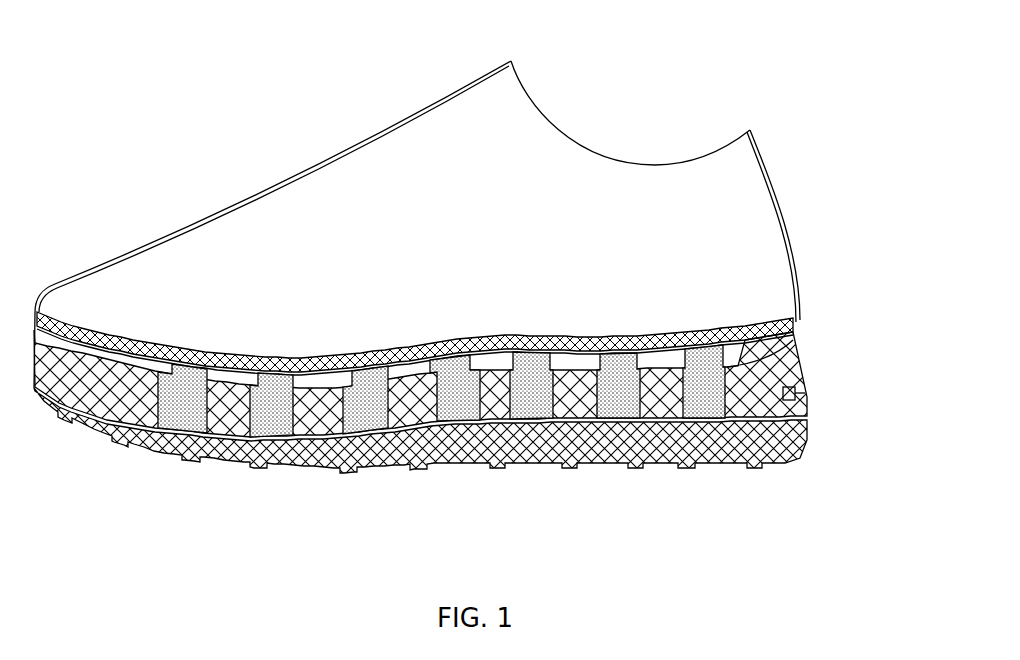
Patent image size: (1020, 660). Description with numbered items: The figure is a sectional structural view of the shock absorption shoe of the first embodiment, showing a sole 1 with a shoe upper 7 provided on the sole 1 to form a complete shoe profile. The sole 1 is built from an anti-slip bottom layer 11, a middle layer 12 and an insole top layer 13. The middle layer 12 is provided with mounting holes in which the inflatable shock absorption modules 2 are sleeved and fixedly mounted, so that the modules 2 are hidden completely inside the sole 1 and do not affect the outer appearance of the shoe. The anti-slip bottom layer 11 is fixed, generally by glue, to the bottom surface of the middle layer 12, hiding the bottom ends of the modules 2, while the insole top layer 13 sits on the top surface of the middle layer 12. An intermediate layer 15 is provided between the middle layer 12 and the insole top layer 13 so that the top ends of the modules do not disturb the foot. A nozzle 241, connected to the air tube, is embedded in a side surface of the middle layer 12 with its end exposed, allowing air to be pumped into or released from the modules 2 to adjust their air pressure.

The sole 1 is at (807, 357).
The shoe upper 7 is at (343, 157).
The insole top layer 13 is at (587, 337).
The intermediate layer 15 is at (495, 334).
The middle layer 12 is at (778, 382).
The inflatable shock absorption module 2 is at (185, 415).
The nozzle 241 is at (803, 397).
The anti-slip bottom layer 11 is at (792, 452).